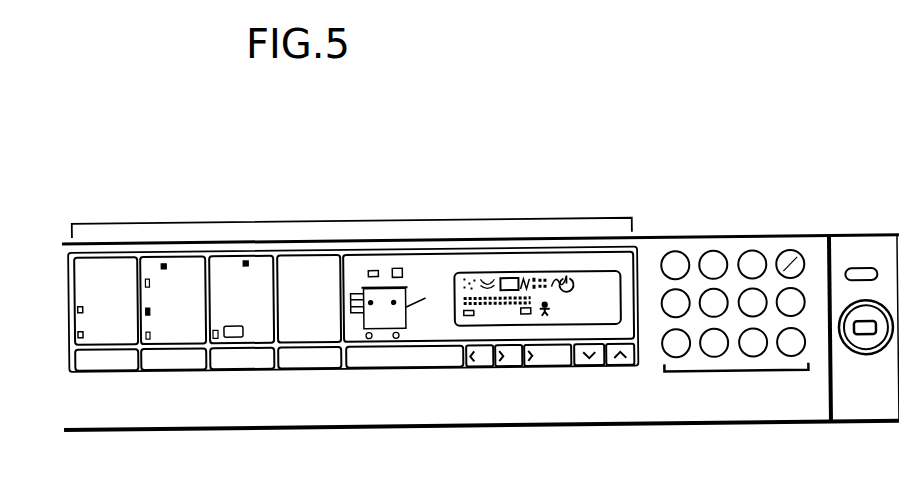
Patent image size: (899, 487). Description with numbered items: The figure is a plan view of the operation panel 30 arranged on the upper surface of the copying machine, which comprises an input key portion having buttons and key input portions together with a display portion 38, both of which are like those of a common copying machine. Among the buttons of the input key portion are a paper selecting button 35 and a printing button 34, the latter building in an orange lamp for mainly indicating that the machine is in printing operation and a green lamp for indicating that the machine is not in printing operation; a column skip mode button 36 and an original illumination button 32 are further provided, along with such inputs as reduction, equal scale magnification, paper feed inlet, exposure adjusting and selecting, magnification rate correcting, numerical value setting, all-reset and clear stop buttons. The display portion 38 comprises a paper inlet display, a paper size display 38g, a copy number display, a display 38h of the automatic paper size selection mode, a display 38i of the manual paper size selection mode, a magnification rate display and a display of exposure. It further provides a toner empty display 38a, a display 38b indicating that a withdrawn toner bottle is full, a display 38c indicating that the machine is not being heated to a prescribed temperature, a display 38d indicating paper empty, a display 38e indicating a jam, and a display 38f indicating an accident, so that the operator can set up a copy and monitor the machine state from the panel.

The operation panel 30 is at (707, 143).
The original illumination button 32 is at (804, 300).
The printing button 34 is at (863, 352).
The paper selecting button 35 is at (318, 371).
The column skip mode button 36 is at (122, 368).
The display portion 38 is at (334, 266).
The toner empty display 38a is at (453, 281).
The display indicating that a withdrawn toner bottle is full 38b is at (481, 281).
The display indicating that the machine is not being heated to a prescribed temperat 38c is at (567, 283).
The display indicating paper empty 38d is at (505, 281).
The display indicating a jam 38e is at (527, 282).
The display indicating an accident 38f is at (543, 320).
The paper size display 38g is at (282, 285).
The display of automatic paper size selection mode 38h is at (77, 309).
The display of manual paper size selection mode 38i is at (73, 333).